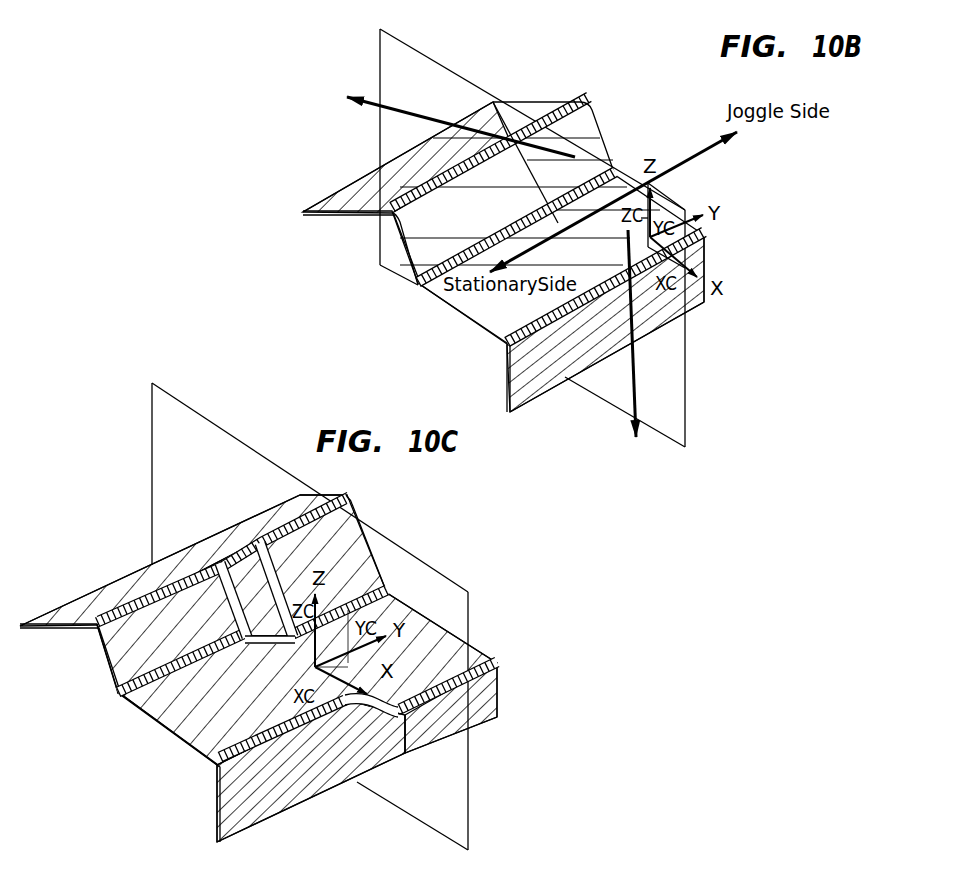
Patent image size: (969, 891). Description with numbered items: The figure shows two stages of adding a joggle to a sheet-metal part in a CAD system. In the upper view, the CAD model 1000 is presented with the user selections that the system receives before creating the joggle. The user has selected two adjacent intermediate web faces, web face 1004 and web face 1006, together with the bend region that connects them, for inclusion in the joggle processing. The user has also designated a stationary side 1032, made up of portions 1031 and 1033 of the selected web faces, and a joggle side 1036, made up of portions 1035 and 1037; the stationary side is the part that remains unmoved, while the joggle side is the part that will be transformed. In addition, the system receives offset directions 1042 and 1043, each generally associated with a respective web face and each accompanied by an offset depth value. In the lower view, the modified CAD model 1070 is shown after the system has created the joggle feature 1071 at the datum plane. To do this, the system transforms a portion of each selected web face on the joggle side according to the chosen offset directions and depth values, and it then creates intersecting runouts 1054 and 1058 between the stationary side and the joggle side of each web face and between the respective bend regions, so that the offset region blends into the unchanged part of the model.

In FIG. 10B, the CAD model 1000 is at (442, 252).
In FIG. 10B, the web face 1004 is at (418, 221).
In FIG. 10B, the web face 1006 is at (467, 307).
In FIG. 10B, the portion of stationary side 1031 is at (417, 283).
In FIG. 10B, the stationary side 1032 is at (485, 252).
In FIG. 10B, the portion of stationary side 1033 is at (491, 340).
In FIG. 10B, the portion of joggle side 1035 is at (595, 140).
In FIG. 10B, the joggle side 1036 is at (690, 153).
In FIG. 10B, the portion of joggle side 1037 is at (674, 204).
In FIG. 10B, the offset direction 1042 is at (556, 156).
In FIG. 10B, the offset direction 1043 is at (610, 353).
In FIG. 10C, the modified CAD model 1070 is at (259, 650).
In FIG. 10C, the runout 1054 is at (230, 583).
In FIG. 10C, the joggle feature 1071 is at (417, 627).
In FIG. 10C, the runout 1058 is at (340, 627).